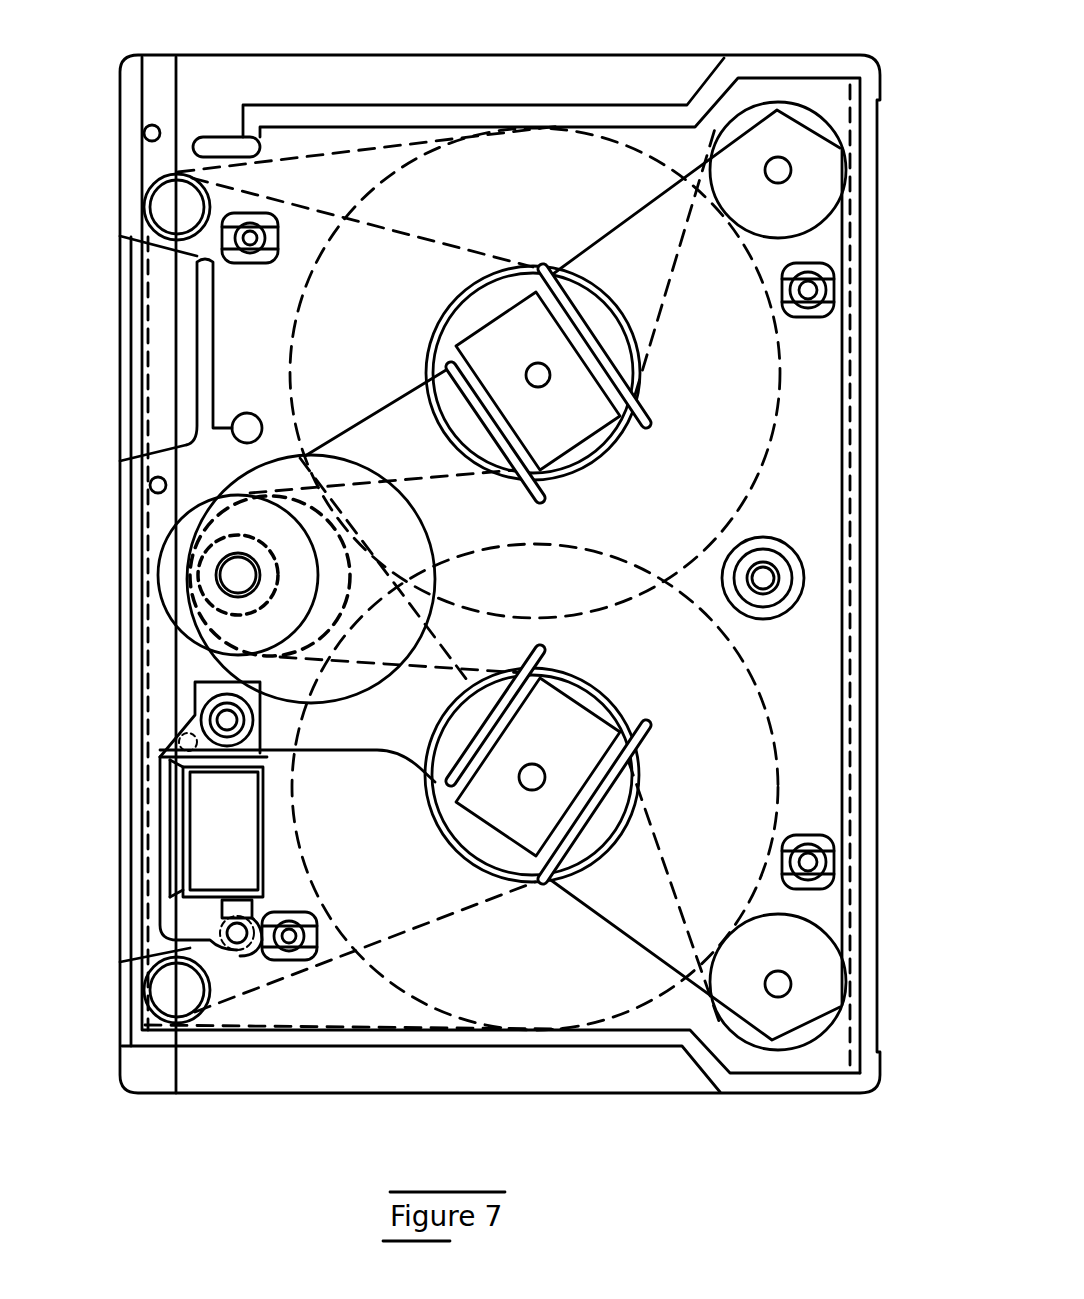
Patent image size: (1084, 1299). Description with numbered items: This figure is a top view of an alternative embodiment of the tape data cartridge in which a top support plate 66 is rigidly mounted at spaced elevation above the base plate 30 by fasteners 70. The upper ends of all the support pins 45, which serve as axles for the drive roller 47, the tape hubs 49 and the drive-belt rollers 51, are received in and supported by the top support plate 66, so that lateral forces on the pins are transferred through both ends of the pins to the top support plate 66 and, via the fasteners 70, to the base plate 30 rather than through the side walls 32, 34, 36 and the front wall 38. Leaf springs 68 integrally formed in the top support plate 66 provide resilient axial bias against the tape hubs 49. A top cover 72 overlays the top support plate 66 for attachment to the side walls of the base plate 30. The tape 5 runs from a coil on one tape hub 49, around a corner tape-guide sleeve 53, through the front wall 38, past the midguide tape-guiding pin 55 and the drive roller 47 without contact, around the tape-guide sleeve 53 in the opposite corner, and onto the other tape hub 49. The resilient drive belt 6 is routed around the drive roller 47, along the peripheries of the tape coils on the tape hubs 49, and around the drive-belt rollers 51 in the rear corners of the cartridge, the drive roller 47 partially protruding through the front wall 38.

The base plate 30 is at (578, 52).
The side wall 32 is at (876, 498).
The side wall 34 is at (400, 105).
The side wall 36 is at (388, 1046).
The front wall 38 is at (128, 858).
The support pins 45 is at (791, 169).
The drive roller 47 is at (160, 592).
The tape hubs 49 is at (586, 302).
The drive-belt rollers 51 is at (824, 204).
The tape-guide sleeves 53 is at (158, 196).
The tape-guiding pin 55 is at (160, 508).
The tape 5 is at (292, 160).
The drive belt 6 is at (442, 480).
The top support plate 66 is at (818, 491).
The leaf springs 68 is at (502, 330).
The fasteners 70 is at (826, 304).
The top cover 72 is at (228, 100).